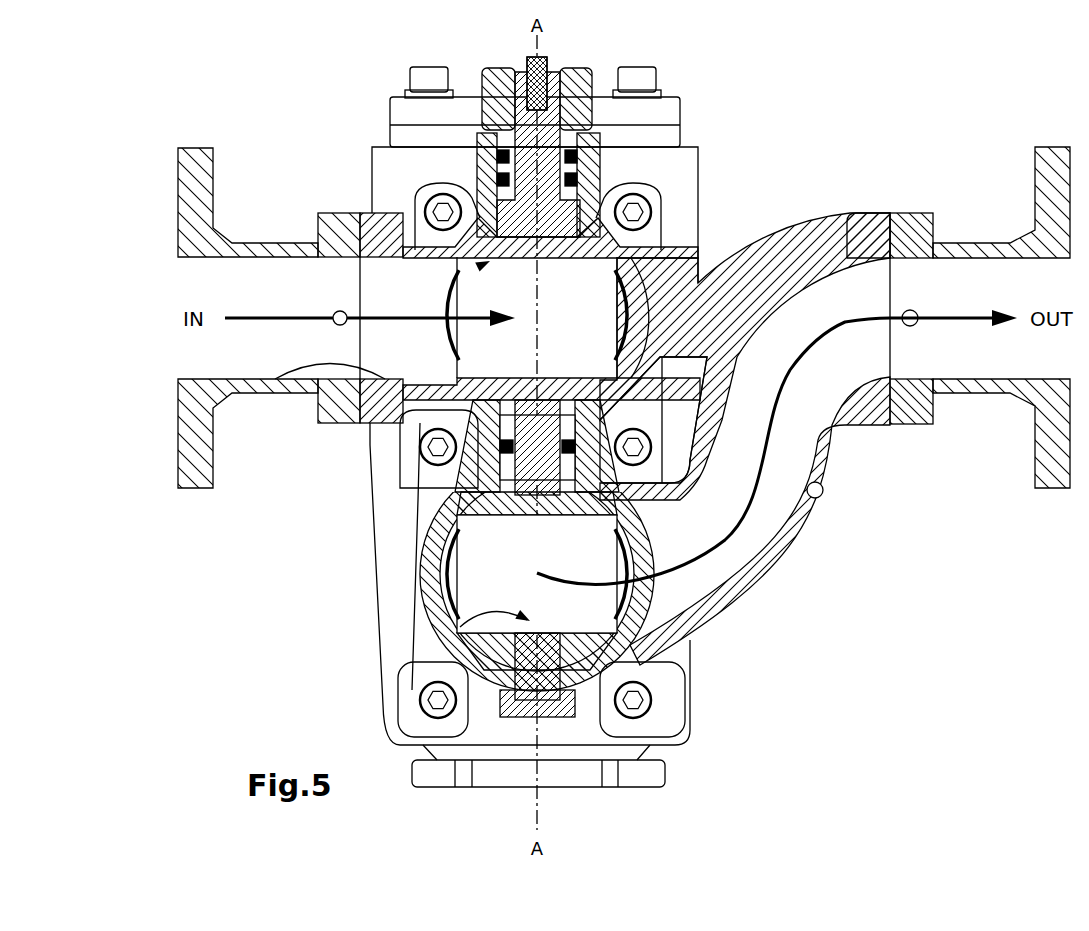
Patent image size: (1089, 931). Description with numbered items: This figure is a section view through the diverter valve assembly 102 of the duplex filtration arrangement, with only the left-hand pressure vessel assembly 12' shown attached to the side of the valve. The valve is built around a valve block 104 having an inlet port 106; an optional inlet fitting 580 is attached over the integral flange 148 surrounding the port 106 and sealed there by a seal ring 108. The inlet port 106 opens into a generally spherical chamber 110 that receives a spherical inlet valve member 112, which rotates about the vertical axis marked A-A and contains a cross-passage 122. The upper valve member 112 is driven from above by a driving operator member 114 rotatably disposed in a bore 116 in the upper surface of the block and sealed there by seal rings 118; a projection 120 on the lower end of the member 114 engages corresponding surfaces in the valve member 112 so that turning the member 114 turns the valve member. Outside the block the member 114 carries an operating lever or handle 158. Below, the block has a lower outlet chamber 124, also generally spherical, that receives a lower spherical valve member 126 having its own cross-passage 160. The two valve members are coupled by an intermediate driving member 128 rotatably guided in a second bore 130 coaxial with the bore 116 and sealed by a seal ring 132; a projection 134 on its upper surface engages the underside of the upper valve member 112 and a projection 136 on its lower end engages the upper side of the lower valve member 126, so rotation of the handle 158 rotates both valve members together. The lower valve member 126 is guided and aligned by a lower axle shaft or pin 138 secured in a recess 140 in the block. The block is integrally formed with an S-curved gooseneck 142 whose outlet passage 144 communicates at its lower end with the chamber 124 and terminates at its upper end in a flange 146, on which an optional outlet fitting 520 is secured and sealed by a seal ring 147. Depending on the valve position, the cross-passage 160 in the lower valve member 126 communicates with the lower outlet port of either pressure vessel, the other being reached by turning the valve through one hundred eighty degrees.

The diverter valve assembly 102 is at (722, 90).
The valve block 104 is at (652, 222).
The inlet port 106 is at (340, 372).
The seal ring 108 is at (345, 258).
The chamber 110 is at (600, 380).
The spherical inlet valve member 112 is at (478, 205).
The driving operator member 114 is at (522, 88).
The bore 116 is at (555, 137).
The seal rings 118 is at (495, 178).
The projection 120 is at (660, 250).
The cross-passage 122 is at (488, 262).
The lower outlet chamber 124 is at (494, 692).
The lower spherical valve member 126 is at (662, 695).
The intermediate driving member 128 is at (618, 528).
The second bore 130 is at (640, 585).
The seal ring 132 is at (598, 488).
The projection 134 is at (498, 452).
The projection 136 is at (450, 560).
The lower axle shaft or pin 138 is at (575, 722).
The recess 140 is at (548, 702).
The gooseneck outlet passage 142 is at (830, 533).
The outlet passage 144 is at (825, 494).
The flange 146 is at (853, 213).
The seal ring 147 is at (895, 390).
The integral flange 148 is at (425, 457).
The operating lever or handle 158 is at (592, 90).
The cross-passage 160 is at (500, 668).
The left-hand pressure vessel assembly 12' is at (332, 584).
The outlet fitting 520 is at (975, 200).
The inlet fitting 580 is at (242, 186).